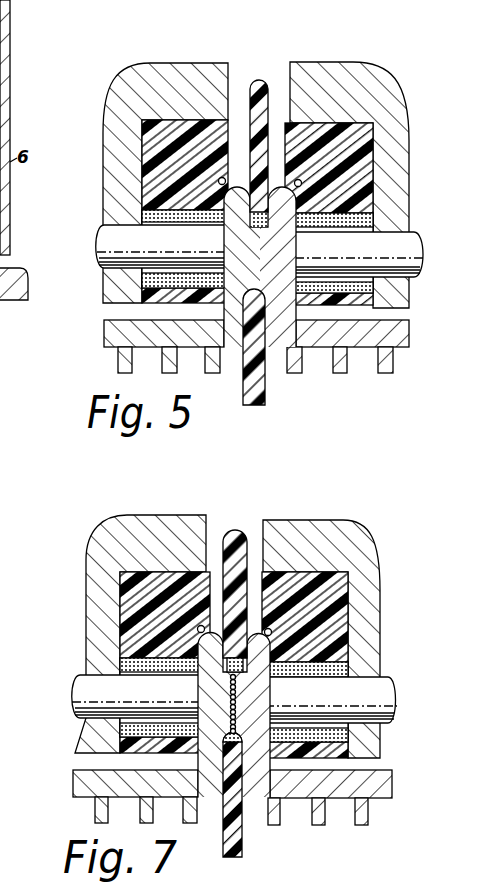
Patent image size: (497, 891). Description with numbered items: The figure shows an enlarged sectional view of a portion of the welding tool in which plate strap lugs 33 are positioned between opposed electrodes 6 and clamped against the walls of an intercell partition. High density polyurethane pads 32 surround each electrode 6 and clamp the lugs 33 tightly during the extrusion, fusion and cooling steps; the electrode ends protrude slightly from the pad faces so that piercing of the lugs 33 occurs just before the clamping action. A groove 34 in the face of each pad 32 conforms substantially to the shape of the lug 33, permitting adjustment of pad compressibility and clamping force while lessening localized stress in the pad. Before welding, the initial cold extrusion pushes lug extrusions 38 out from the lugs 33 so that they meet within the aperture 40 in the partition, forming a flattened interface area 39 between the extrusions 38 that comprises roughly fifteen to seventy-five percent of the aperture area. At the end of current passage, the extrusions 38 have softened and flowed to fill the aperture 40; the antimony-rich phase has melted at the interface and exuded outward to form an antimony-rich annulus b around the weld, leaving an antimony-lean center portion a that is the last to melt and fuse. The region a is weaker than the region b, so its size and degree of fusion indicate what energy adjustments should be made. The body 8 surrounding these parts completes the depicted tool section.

In FIG. 5, the housing body 8 is at (197, 70).
In FIG. 7, the housing body 8 is at (108, 538).
In FIG. 5, the high density polyurethane pad 32 is at (165, 128).
In FIG. 7, the high density polyurethane pad 32 is at (157, 577).
In FIG. 5, the groove 34 is at (223, 177).
In FIG. 7, the groove 34 is at (197, 627).
In FIG. 5, the lug extrusion 38 is at (218, 184).
In FIG. 5, the electrode 6 is at (160, 230).
In FIG. 7, the electrode 6 is at (130, 683).
In FIG. 5, the flattened interface area 39 is at (220, 252).
In FIG. 7, the flattened interface area 39 is at (222, 698).
In FIG. 5, the lug 33 is at (116, 331).
In FIG. 7, the lug 33 is at (88, 780).
In FIG. 5, the aperture 40 is at (243, 292).
In FIG. 7, the antimony-lean center portion a is at (228, 707).
In FIG. 7, the antimony-rich annulus b is at (235, 666).